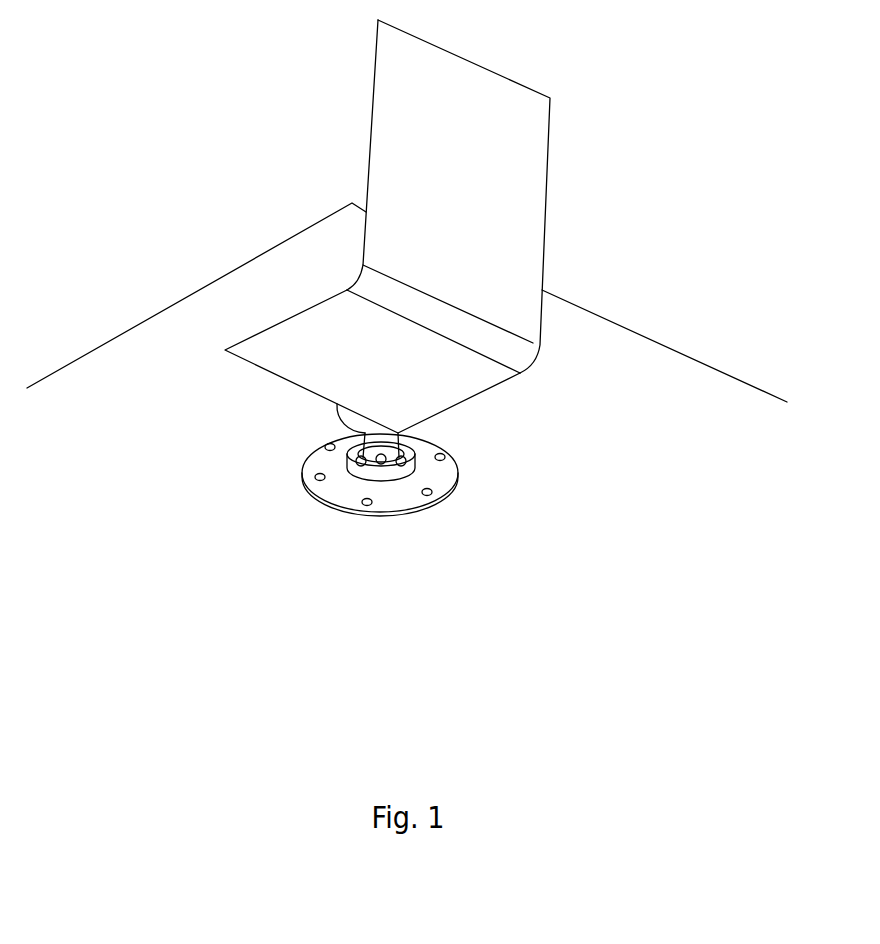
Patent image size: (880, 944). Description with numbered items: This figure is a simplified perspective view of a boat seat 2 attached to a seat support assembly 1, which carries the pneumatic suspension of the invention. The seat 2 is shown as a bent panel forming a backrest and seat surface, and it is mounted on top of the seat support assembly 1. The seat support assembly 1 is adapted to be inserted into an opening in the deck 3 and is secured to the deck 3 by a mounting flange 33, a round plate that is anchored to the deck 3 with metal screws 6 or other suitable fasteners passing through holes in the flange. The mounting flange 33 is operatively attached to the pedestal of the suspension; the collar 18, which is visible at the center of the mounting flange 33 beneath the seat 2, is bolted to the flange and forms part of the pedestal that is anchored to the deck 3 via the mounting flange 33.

The seat support assembly 1 is at (397, 506).
The seat 2 is at (390, 140).
The deck 3 is at (567, 538).
The metal screws 6 is at (367, 503).
The collar 18 is at (372, 473).
The mounting flange 33 is at (393, 495).